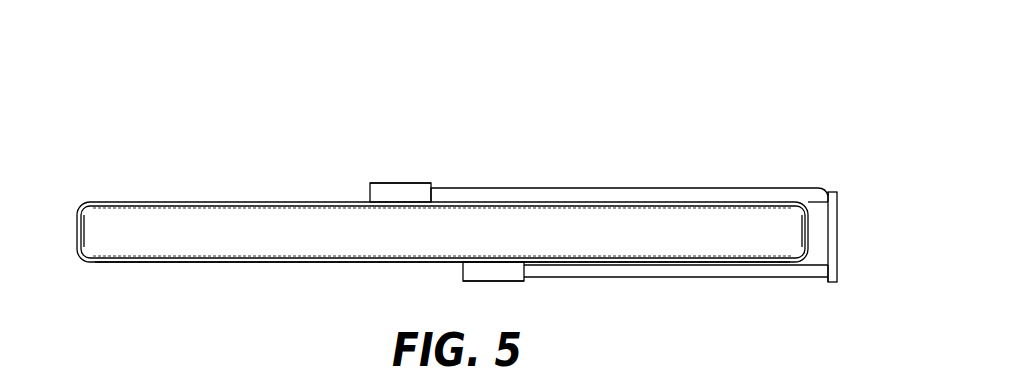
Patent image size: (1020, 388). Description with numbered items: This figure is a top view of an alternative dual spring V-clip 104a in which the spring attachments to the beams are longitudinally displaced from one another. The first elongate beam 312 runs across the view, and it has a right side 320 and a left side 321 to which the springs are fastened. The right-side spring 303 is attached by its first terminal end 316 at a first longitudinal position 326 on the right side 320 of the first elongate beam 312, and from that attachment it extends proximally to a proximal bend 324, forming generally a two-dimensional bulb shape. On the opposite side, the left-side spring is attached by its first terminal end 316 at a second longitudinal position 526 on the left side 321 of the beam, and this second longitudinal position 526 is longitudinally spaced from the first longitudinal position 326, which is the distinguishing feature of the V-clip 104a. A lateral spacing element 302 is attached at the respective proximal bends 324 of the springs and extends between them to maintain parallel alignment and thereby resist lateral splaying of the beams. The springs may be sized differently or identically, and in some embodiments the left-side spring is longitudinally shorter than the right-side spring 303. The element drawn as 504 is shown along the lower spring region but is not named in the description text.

The right side 320 is at (150, 197).
The first elongate beam 312 is at (283, 208).
The left side 321 is at (152, 272).
The right-side spring 303 is at (458, 187).
The first terminal end 316 is at (372, 183).
The first longitudinal position 326 is at (392, 127).
The second longitudinal position 526 is at (500, 288).
The bottom layer 504 is at (622, 272).
The alternative dual spring V-clip 104a is at (568, 160).
The lateral spacing element 302 is at (837, 213).
The proximal bend 324 is at (823, 190).